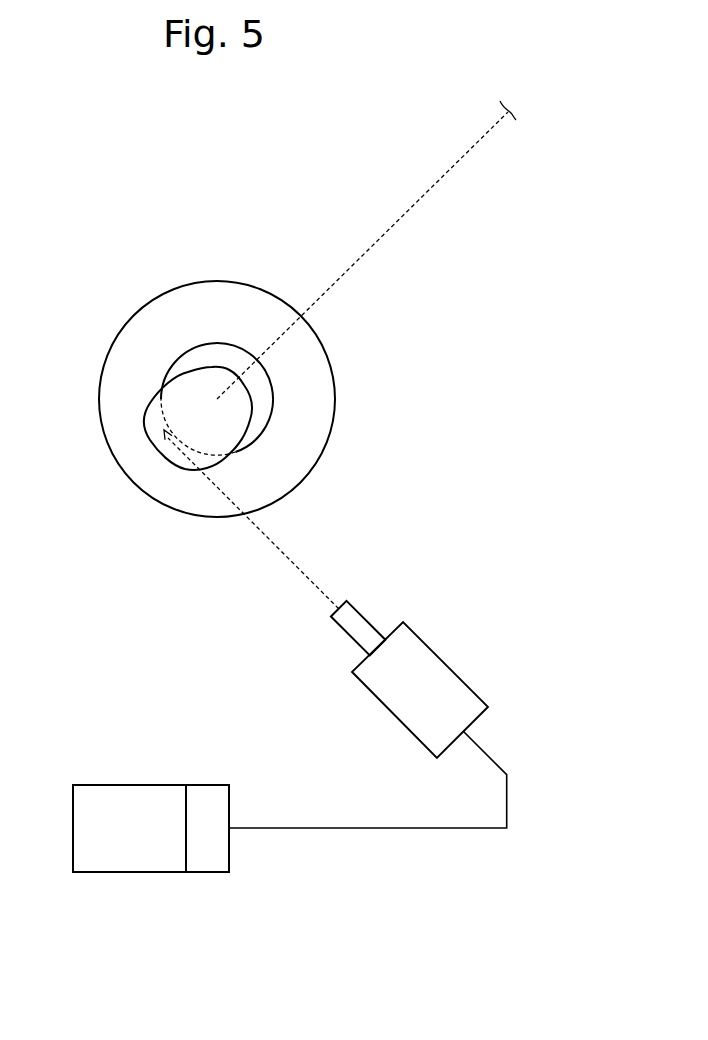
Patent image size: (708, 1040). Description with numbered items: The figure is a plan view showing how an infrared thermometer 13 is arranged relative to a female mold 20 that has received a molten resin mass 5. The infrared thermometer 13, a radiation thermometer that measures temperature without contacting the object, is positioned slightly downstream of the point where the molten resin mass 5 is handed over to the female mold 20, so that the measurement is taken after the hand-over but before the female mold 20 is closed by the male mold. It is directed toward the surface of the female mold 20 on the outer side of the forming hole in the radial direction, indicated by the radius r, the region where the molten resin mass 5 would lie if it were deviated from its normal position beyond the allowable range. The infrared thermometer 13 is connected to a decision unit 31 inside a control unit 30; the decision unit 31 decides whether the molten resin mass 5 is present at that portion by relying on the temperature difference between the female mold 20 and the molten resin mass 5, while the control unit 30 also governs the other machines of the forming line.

The molten resin mass 5 is at (185, 378).
The female mold 20 is at (320, 400).
The infrared thermometer 13 is at (438, 670).
The control unit 30 is at (134, 795).
The decision unit 31 is at (208, 795).
The radius of rotation r is at (398, 218).